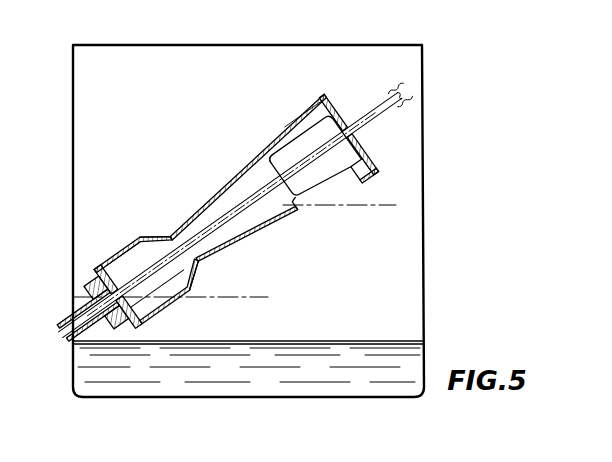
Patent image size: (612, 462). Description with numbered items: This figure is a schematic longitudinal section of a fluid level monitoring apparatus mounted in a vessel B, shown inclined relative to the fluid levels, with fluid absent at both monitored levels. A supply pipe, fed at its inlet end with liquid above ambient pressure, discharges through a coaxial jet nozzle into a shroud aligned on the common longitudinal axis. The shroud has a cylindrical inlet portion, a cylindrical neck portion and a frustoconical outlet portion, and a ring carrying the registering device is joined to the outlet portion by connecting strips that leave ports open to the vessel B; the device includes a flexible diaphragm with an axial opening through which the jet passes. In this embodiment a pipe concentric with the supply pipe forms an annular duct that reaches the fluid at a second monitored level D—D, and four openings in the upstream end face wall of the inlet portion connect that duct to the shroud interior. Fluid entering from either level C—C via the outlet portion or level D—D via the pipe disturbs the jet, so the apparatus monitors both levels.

The vessel B is at (430, 322).
The level C— C is at (339, 206).
The level D— D is at (181, 298).